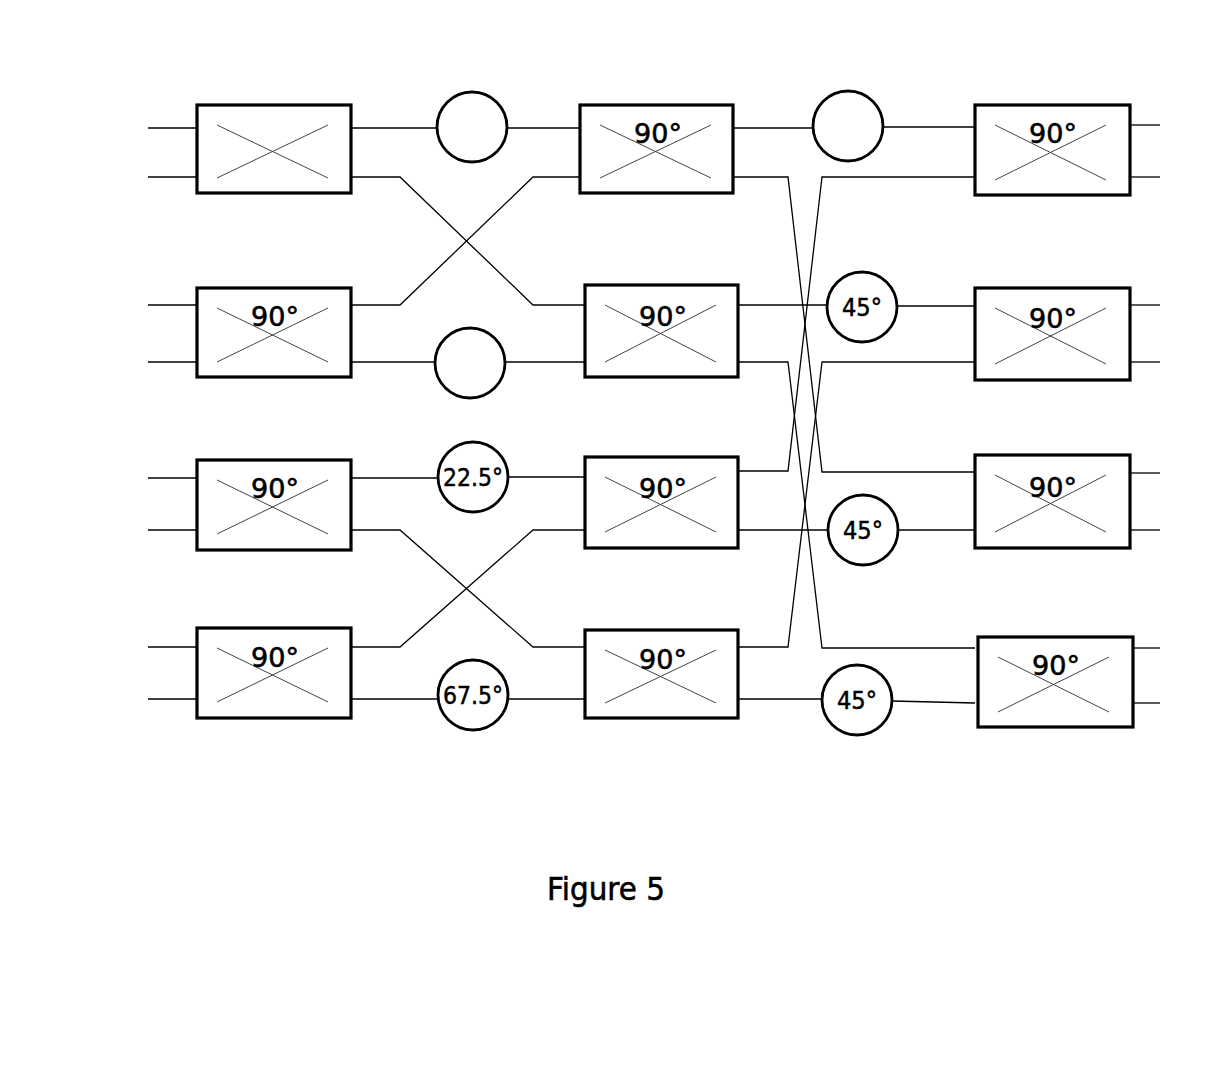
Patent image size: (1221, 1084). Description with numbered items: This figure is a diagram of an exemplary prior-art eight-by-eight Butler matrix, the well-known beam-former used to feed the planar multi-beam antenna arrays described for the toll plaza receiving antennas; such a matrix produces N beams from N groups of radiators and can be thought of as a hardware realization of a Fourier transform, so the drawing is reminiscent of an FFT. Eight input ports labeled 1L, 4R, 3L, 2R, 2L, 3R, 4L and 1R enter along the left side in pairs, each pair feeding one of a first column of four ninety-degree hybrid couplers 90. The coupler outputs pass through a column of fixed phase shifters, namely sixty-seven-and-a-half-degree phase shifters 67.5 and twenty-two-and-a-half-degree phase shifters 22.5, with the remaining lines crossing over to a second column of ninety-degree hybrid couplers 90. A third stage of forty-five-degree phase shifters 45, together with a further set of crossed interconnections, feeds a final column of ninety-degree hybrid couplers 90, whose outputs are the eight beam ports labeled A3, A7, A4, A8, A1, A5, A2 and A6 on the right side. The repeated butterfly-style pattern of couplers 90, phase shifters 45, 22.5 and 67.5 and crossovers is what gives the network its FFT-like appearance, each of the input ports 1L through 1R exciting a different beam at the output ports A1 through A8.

The 90 degree hybrid coupler 90 is at (274, 149).
The 45 degree phase shifter 45 is at (848, 126).
The 22.5 degree phase shifter 22.5 is at (470, 363).
The 67.5 degree phase shifter 67.5 is at (472, 127).
The input port 1L is at (151, 126).
The input port 4R is at (149, 175).
The input port 3L is at (151, 303).
The input port 2R is at (149, 361).
The input port 2L is at (152, 480).
The input port 3R is at (149, 530).
The input port 4L is at (151, 647).
The input port 1R is at (149, 699).
The output port A1 is at (1166, 477).
The output port A2 is at (1168, 650).
The output port A3 is at (1164, 121).
The output port A4 is at (1164, 303).
The output port A5 is at (1166, 533).
The output port A6 is at (1168, 707).
The output port A7 is at (1164, 176).
The output port A8 is at (1164, 359).